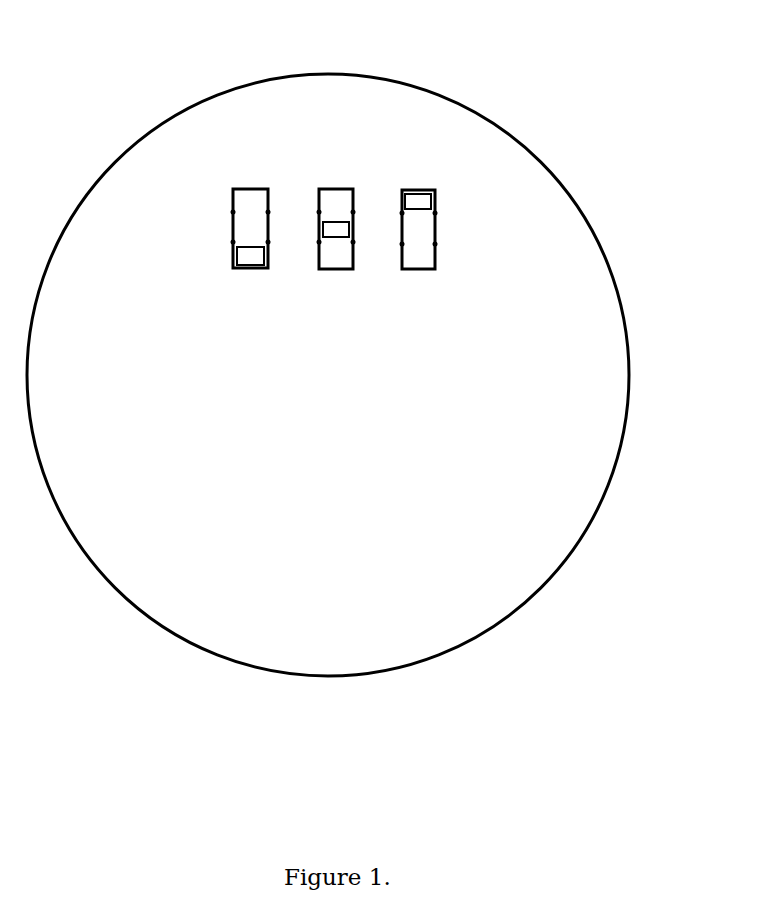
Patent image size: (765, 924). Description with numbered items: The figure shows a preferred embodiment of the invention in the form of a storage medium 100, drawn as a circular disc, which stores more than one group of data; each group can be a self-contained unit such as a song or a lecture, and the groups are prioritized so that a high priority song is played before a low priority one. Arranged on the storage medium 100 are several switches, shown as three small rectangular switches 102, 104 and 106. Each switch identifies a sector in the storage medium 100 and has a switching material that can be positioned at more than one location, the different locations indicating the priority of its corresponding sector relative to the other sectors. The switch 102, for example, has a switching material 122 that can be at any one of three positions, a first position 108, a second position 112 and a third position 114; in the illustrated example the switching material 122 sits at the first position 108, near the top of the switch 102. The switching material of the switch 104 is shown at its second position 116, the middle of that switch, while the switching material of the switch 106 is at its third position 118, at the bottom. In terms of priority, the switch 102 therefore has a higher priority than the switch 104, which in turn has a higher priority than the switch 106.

The storage medium 100 is at (632, 293).
The switch 102 is at (418, 186).
The switch 104 is at (336, 183).
The switch 106 is at (253, 183).
The first position 108 is at (435, 202).
The second position 112 is at (435, 230).
The third position 114 is at (435, 257).
The second position 116 is at (353, 231).
The third position 118 is at (270, 257).
The switching material 122 is at (410, 190).